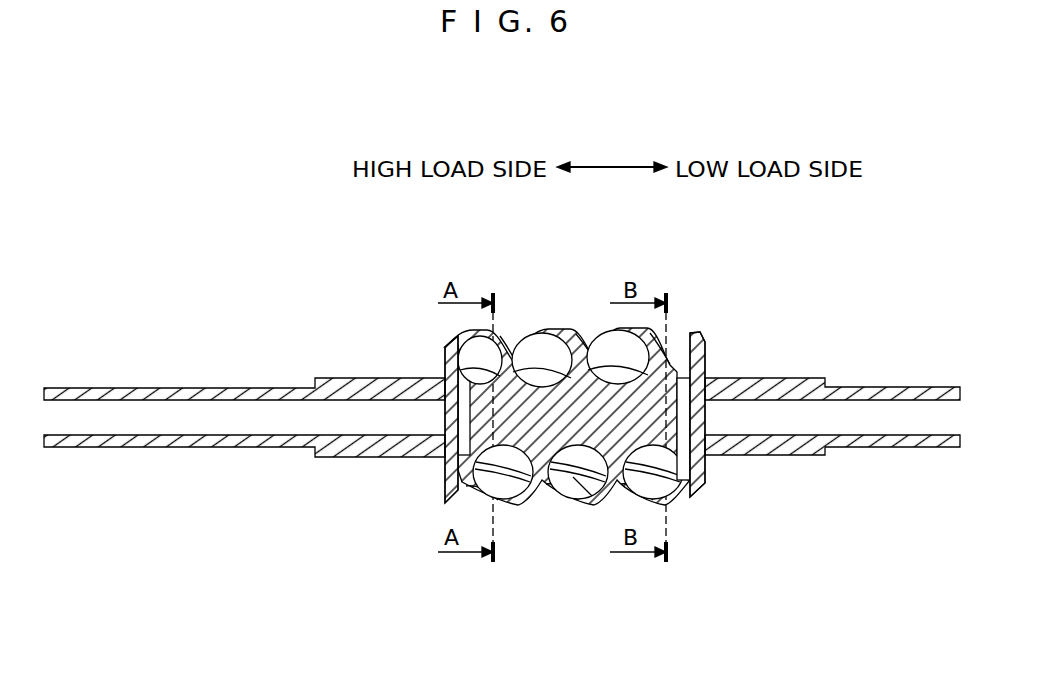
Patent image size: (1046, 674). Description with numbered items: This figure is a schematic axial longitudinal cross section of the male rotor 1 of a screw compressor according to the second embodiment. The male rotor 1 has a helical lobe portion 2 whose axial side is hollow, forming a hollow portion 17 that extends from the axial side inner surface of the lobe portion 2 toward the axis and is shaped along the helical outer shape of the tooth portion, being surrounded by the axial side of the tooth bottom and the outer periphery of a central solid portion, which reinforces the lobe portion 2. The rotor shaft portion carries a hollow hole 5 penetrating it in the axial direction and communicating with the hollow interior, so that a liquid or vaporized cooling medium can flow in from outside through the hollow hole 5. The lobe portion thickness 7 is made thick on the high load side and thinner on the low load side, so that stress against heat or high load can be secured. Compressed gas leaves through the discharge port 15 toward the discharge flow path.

The male rotor 1 is at (548, 300).
The lobe portion 2 is at (550, 487).
The hollow hole 5 is at (149, 422).
The lobe portion thickness 7 is at (618, 515).
The discharge port 15 is at (470, 353).
The hollow portion 17 is at (447, 463).